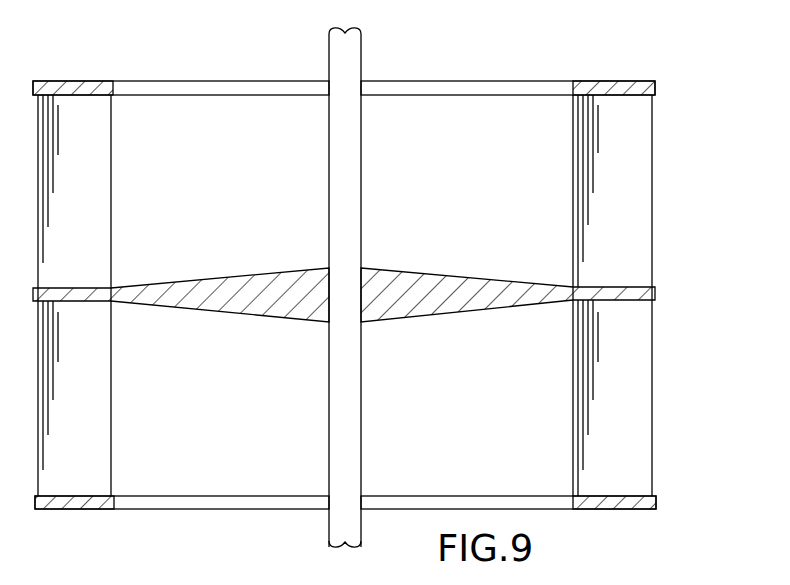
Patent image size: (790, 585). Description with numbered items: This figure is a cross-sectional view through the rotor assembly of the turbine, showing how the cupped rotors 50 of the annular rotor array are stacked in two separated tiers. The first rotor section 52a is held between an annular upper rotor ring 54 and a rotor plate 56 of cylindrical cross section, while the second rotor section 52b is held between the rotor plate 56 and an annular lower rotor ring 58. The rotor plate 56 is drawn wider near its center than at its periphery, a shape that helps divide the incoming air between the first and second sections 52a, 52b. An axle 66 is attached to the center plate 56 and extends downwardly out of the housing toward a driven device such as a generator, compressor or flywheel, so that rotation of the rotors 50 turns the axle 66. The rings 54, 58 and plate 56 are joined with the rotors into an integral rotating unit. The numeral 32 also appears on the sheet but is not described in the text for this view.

The filter module 32 is at (677, 584).
The cupped rotor 50 is at (640, 205).
The first rotor section 52a is at (670, 150).
The second rotor section 52b is at (670, 372).
The upper rotor ring 54 is at (616, 80).
The rotor plate 56 is at (237, 283).
The lower rotor ring 58 is at (620, 495).
The axle 66 is at (361, 51).